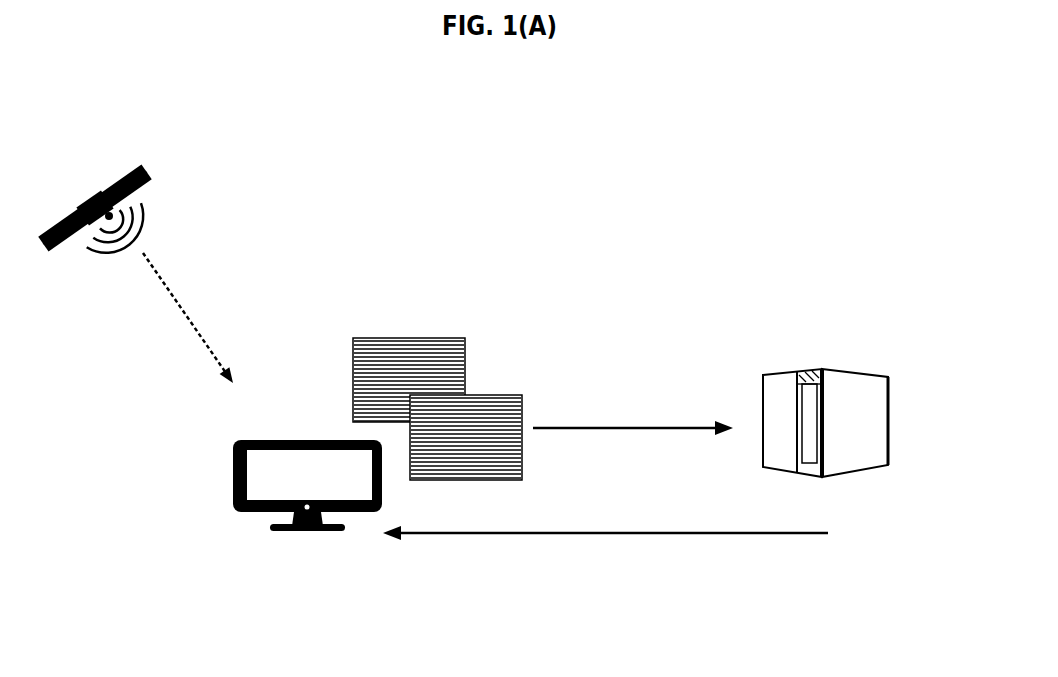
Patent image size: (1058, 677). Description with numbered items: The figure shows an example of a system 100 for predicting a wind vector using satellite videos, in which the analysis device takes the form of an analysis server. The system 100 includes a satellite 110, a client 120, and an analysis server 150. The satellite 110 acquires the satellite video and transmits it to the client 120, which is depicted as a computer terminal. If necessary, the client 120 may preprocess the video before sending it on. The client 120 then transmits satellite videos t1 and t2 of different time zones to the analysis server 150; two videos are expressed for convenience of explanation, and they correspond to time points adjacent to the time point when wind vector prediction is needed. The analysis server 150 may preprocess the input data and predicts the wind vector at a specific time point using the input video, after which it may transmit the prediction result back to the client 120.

The system 100 is at (129, 540).
The satellite 110 is at (73, 184).
The client 120 is at (287, 437).
The analysis server 150 is at (873, 367).
The satellite video t1 is at (437, 338).
The satellite video t2 is at (508, 395).